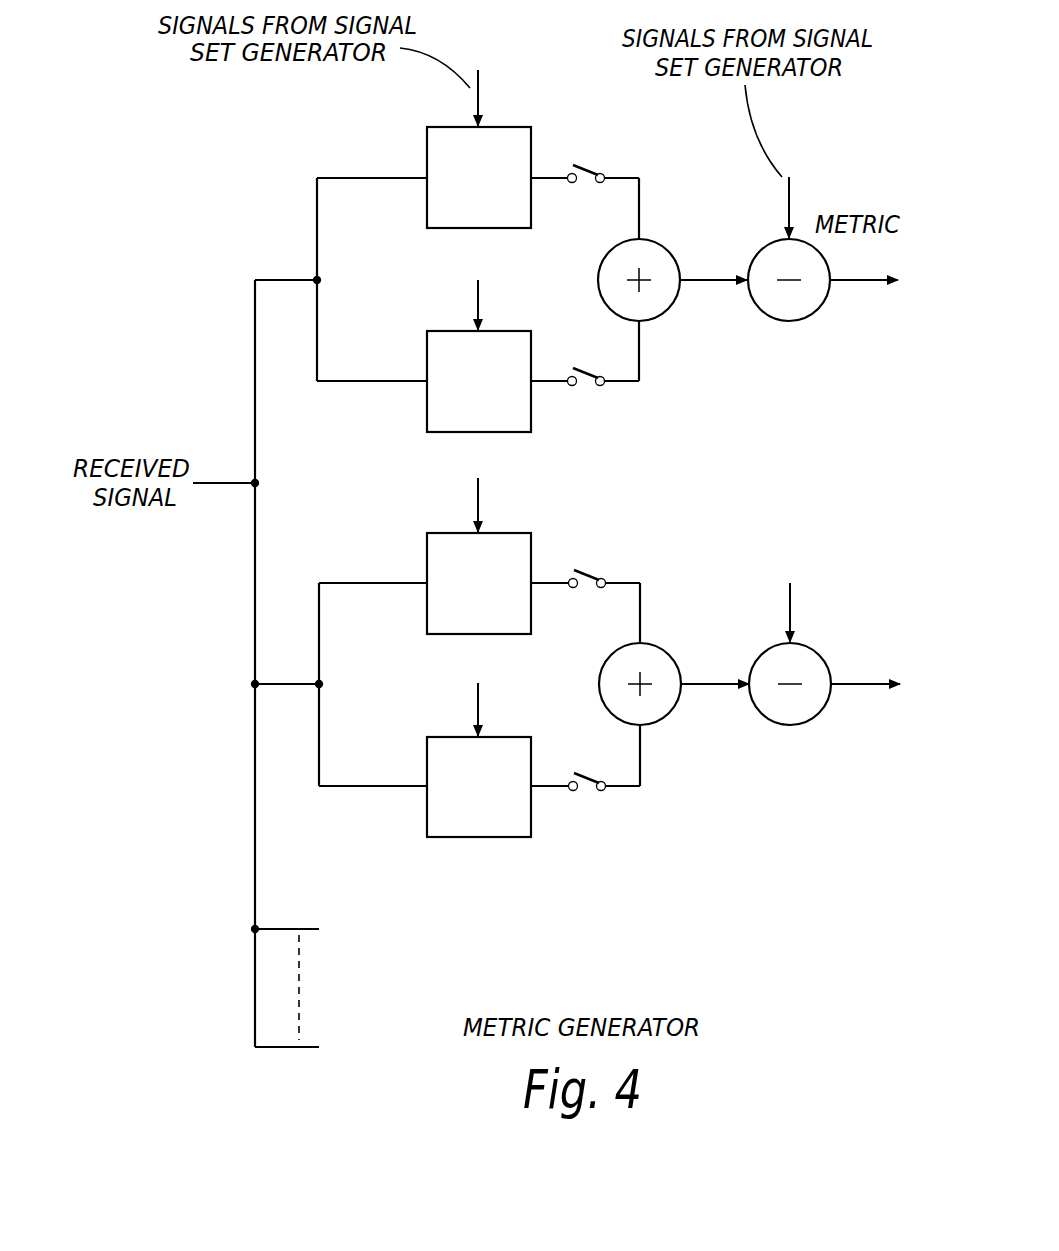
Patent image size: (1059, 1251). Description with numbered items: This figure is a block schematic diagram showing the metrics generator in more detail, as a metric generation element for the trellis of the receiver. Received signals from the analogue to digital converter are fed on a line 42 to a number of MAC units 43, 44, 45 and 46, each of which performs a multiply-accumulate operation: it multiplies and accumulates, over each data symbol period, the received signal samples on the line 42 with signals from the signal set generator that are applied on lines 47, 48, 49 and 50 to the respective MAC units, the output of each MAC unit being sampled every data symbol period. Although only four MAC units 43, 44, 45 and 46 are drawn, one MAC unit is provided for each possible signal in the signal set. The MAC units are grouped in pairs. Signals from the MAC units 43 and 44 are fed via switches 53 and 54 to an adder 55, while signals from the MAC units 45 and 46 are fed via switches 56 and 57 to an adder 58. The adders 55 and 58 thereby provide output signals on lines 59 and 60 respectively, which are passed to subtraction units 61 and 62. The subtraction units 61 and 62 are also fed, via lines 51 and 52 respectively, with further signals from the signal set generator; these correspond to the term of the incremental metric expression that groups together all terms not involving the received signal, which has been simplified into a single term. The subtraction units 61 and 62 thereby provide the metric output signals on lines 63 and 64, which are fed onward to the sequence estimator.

The line 42 is at (255, 470).
The MAC unit 43 is at (426, 220).
The MAC unit 44 is at (426, 424).
The MAC unit 45 is at (426, 626).
The MAC unit 46 is at (426, 830).
The line 47 is at (478, 85).
The line 48 is at (478, 300).
The line 49 is at (478, 497).
The line 50 is at (478, 708).
The line 51 is at (789, 196).
The line 52 is at (790, 600).
The switch 53 is at (590, 172).
The switch 54 is at (587, 386).
The adder 55 is at (662, 314).
The switch 56 is at (591, 577).
The switch 57 is at (588, 791).
The adder 58 is at (663, 718).
The line 59 is at (708, 280).
The line 60 is at (715, 670).
The subtraction unit 61 is at (812, 317).
The subtraction unit 62 is at (812, 721).
The line 63 is at (838, 280).
The line 64 is at (838, 684).